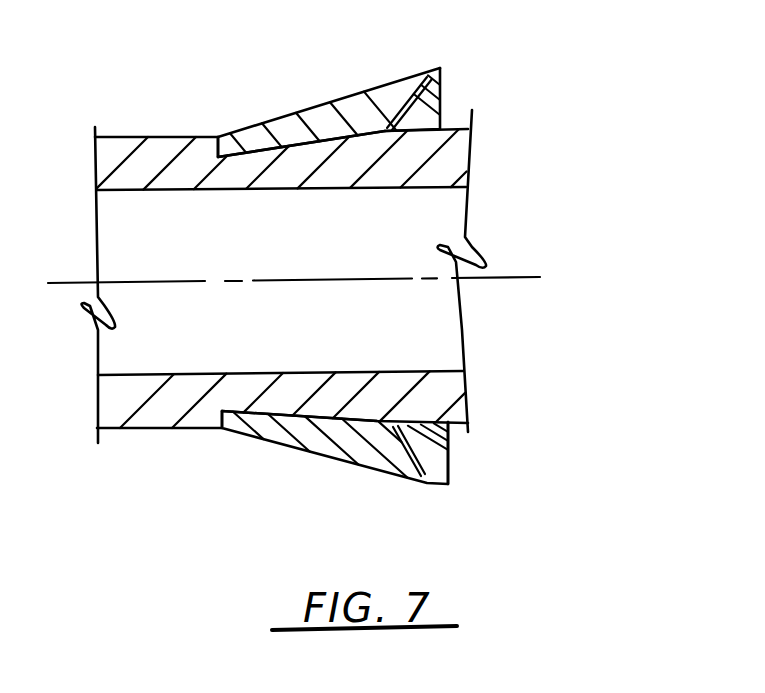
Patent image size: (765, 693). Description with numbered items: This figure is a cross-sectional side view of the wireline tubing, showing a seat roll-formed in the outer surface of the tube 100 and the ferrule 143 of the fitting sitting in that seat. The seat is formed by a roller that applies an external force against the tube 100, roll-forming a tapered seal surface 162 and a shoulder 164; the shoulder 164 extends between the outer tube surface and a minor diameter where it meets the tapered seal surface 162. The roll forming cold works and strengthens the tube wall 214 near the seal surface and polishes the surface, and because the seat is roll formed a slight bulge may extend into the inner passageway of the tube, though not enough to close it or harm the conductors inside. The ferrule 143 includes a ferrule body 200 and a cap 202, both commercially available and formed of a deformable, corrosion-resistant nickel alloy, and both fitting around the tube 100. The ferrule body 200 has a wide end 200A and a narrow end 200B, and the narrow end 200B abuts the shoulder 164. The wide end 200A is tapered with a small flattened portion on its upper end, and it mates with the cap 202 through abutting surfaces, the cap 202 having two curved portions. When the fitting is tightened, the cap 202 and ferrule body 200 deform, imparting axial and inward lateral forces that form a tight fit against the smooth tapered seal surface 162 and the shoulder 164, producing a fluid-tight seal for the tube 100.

The tube 100 is at (160, 133).
The tubular body wall 214 is at (452, 148).
The ferrule 143 is at (311, 91).
The seal surface 162 is at (290, 147).
The shoulder 164 is at (246, 90).
The ferrule body 200 is at (382, 485).
The wide end 200A is at (409, 471).
The narrow end 200B is at (235, 432).
The cap 202 is at (448, 484).